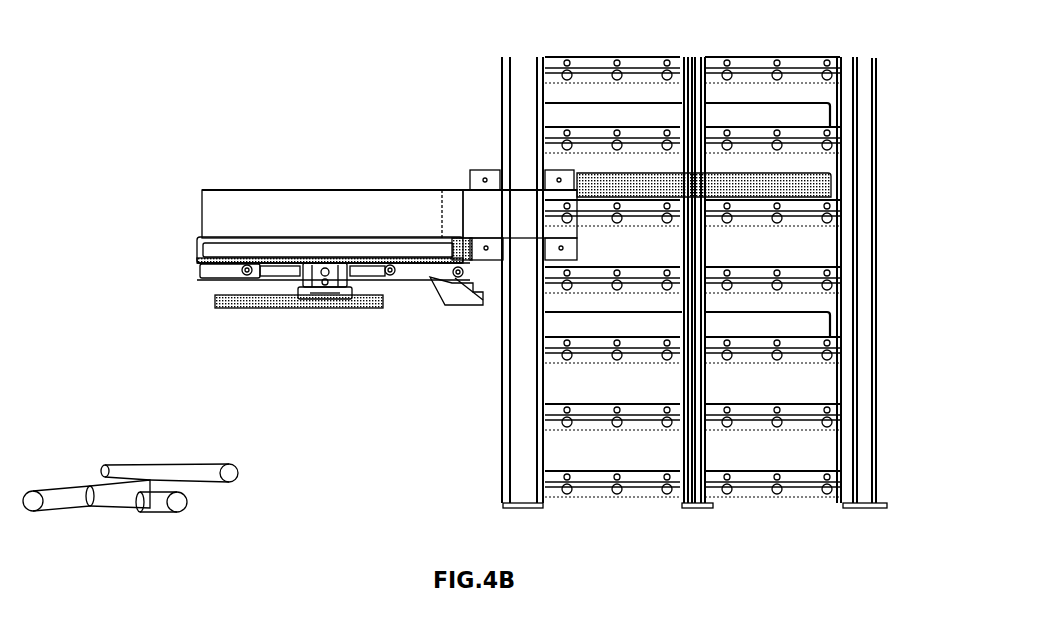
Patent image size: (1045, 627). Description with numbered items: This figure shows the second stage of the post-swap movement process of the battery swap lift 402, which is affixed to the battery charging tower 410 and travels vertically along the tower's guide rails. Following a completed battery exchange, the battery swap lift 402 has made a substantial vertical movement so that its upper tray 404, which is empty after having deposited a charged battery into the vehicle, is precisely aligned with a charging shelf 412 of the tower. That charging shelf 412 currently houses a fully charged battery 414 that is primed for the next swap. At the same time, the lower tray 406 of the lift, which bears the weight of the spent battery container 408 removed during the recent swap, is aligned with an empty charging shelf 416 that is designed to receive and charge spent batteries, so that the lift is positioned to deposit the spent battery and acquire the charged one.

The battery swap lift 402 is at (410, 205).
The upper tray 404 is at (352, 192).
The lower tray 406 is at (365, 273).
The spent battery container 408 is at (227, 260).
The battery charging tower 410 is at (510, 82).
The charging shelf 412 is at (750, 207).
The fully charged battery 414 is at (800, 190).
The empty charging shelf 416 is at (643, 273).